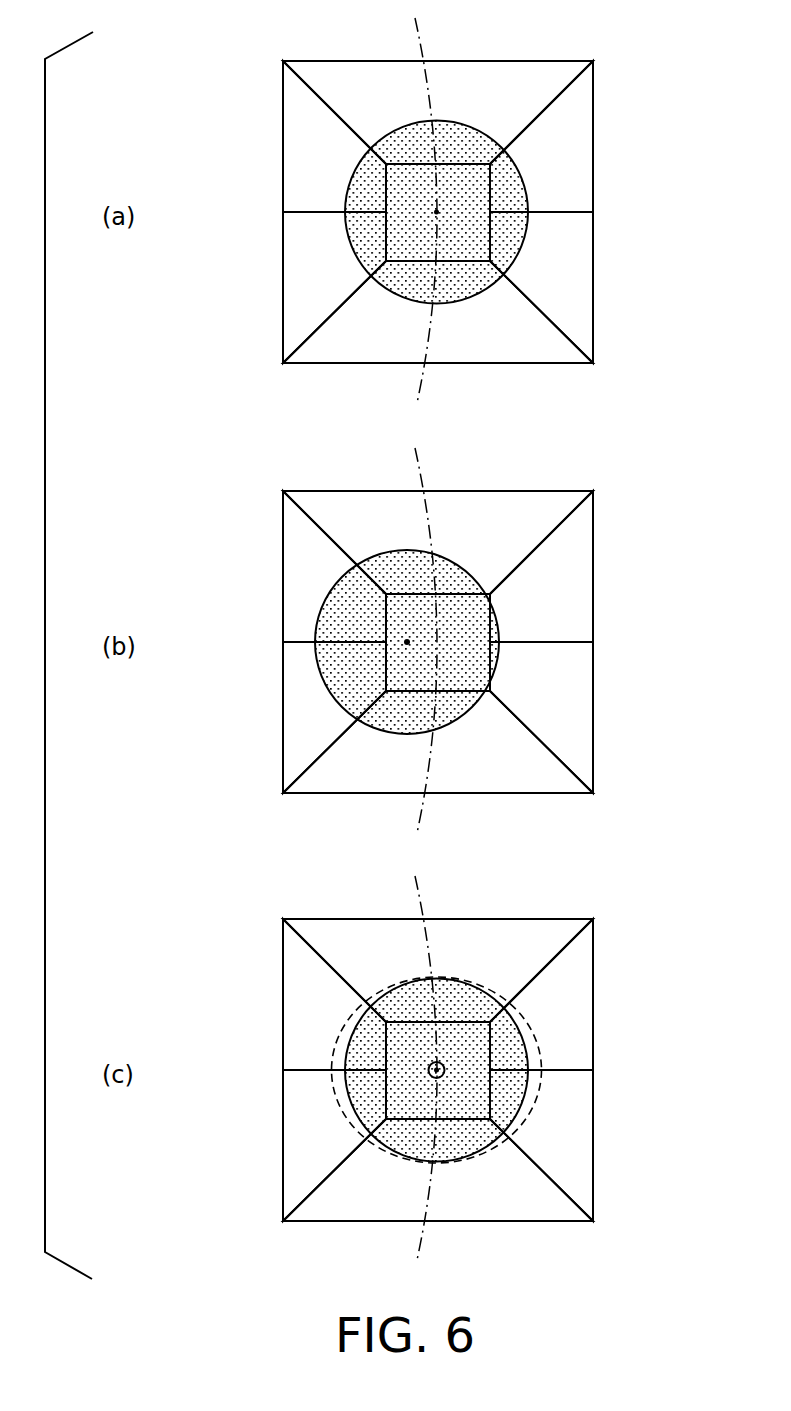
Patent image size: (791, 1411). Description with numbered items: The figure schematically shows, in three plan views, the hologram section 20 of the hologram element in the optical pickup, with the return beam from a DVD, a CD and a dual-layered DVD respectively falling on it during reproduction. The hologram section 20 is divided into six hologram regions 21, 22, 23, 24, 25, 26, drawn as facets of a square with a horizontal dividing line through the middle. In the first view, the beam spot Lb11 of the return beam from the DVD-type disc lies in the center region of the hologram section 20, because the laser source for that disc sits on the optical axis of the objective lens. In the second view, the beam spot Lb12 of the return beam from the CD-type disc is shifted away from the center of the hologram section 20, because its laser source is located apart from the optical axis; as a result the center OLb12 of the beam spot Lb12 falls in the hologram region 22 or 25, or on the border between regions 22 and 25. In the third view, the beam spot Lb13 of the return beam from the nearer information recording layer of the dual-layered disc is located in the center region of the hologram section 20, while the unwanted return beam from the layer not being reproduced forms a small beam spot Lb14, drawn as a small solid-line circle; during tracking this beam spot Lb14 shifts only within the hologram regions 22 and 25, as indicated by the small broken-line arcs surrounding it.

The hologram section 20 is at (618, 57).
The hologram region 21 is at (283, 158).
The hologram region 22 is at (343, 61).
The hologram region 23 is at (593, 157).
The hologram region 24 is at (593, 277).
The hologram region 25 is at (340, 364).
The hologram region 26 is at (283, 273).
The beam spot Lb11 is at (527, 228).
The beam spot Lb12 is at (498, 654).
The center of beam spot OLb12 is at (407, 642).
The beam spot Lb13 is at (538, 1088).
The beam spot Lb14 is at (444, 1066).